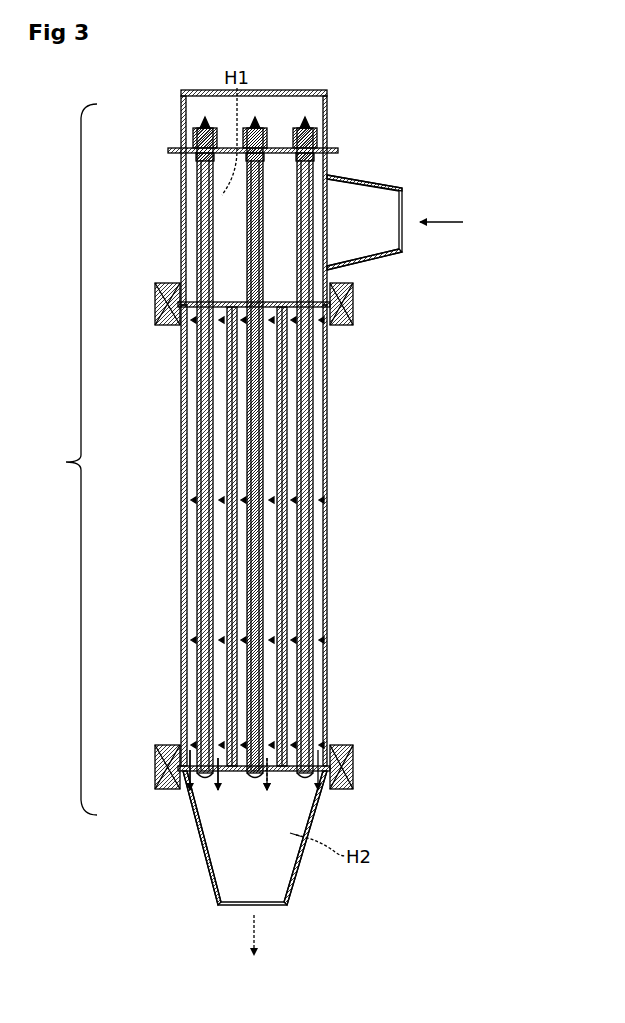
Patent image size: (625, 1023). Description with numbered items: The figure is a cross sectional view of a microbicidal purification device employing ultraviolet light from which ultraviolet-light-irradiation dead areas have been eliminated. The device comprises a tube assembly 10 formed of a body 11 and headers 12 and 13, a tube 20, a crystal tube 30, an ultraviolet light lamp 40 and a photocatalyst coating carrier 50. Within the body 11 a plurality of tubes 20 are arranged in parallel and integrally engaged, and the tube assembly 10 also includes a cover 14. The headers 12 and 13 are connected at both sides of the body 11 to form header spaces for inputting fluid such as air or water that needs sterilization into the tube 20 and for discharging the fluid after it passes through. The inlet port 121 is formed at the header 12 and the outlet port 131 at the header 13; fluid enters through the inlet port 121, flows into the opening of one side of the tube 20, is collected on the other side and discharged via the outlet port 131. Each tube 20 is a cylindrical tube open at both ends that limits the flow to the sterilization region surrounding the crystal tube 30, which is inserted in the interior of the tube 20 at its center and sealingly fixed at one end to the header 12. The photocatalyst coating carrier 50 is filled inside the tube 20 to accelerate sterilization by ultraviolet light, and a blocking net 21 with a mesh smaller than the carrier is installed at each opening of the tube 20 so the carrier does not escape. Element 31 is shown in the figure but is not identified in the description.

The tube assembly 10 is at (68, 459).
The body 11 is at (172, 538).
The header 12 is at (172, 231).
The header 13 is at (188, 835).
The cover 14 is at (172, 121).
The tube 20 is at (327, 396).
The blocking net 21 is at (340, 325).
The crystal tube 30 is at (313, 458).
The support plate 31 is at (338, 151).
The ultraviolet light lamp 40 is at (318, 128).
The photocatalyst coating carrier 50 is at (322, 570).
The inlet port 121 is at (372, 182).
The outlet port 131 is at (268, 907).